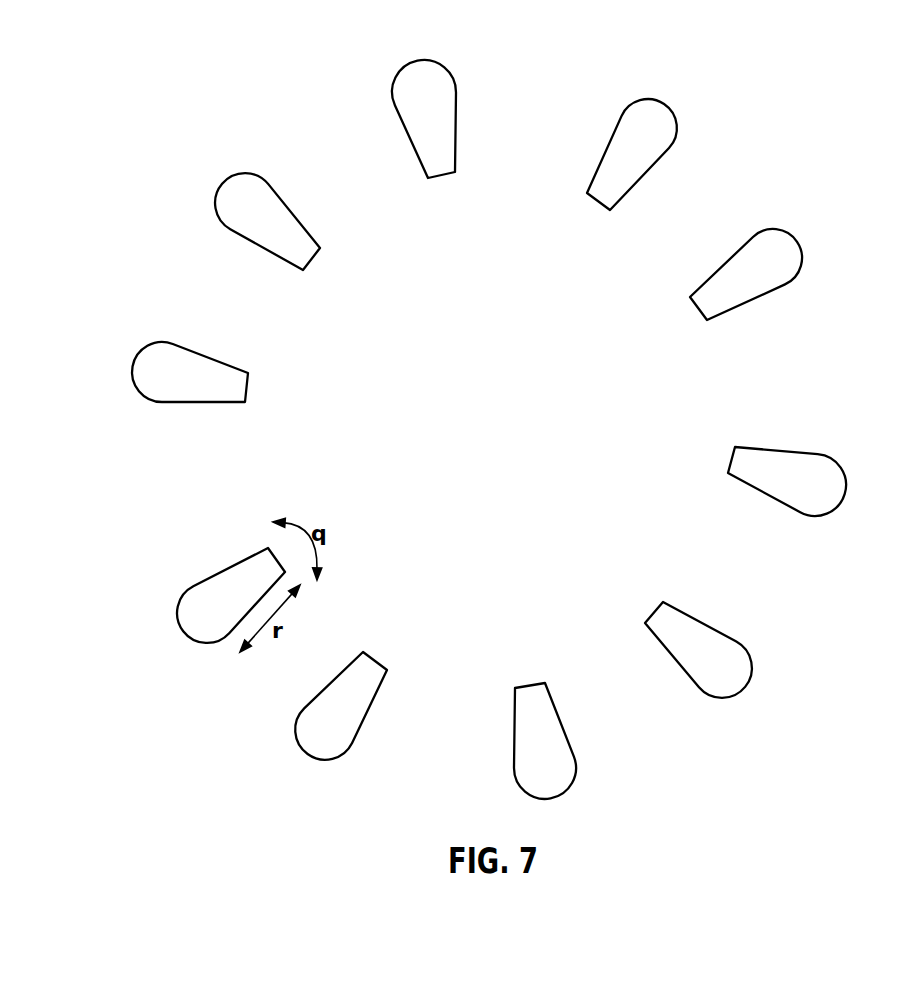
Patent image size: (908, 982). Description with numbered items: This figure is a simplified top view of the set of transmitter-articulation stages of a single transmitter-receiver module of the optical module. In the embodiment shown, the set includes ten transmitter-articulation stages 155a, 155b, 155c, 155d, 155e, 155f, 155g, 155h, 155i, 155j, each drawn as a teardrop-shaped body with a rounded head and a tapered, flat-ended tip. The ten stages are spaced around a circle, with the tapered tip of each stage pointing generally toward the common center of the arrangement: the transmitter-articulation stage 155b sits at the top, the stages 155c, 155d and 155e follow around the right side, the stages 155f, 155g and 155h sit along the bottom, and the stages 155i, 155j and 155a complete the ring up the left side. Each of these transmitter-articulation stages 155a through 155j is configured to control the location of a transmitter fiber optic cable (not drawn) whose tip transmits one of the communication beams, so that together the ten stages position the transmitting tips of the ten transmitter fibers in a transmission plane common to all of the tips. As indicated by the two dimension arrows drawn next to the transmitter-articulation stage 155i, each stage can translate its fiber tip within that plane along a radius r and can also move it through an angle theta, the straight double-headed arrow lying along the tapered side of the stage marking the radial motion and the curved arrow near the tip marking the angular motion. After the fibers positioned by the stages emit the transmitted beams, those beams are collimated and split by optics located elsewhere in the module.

The transmitter-articulation stage 155a is at (312, 259).
The transmitter-articulation stage 155b is at (440, 177).
The transmitter-articulation stage 155c is at (598, 203).
The transmitter-articulation stage 155d is at (698, 308).
The transmitter-articulation stage 155e is at (731, 460).
The transmitter-articulation stage 155f is at (654, 612).
The transmitter-articulation stage 155g is at (530, 685).
The transmitter-articulation stage 155h is at (375, 661).
The transmitter-articulation stage 155i is at (213, 575).
The transmitter-articulation stage 155j is at (247, 388).